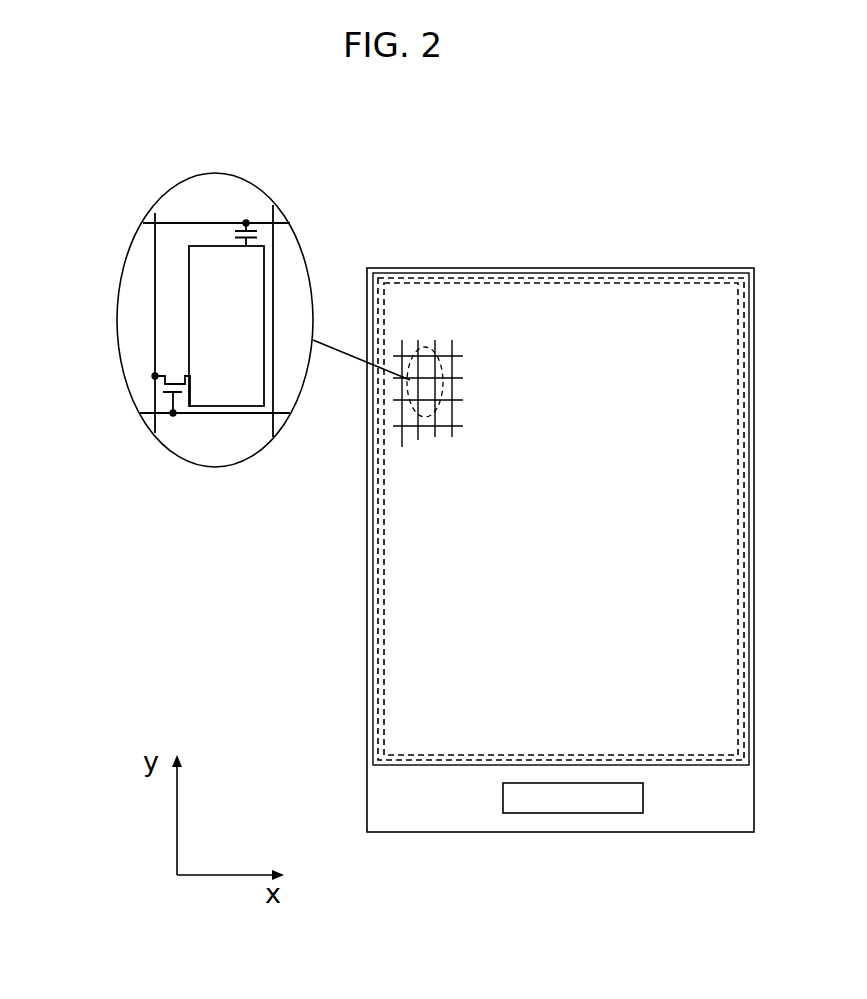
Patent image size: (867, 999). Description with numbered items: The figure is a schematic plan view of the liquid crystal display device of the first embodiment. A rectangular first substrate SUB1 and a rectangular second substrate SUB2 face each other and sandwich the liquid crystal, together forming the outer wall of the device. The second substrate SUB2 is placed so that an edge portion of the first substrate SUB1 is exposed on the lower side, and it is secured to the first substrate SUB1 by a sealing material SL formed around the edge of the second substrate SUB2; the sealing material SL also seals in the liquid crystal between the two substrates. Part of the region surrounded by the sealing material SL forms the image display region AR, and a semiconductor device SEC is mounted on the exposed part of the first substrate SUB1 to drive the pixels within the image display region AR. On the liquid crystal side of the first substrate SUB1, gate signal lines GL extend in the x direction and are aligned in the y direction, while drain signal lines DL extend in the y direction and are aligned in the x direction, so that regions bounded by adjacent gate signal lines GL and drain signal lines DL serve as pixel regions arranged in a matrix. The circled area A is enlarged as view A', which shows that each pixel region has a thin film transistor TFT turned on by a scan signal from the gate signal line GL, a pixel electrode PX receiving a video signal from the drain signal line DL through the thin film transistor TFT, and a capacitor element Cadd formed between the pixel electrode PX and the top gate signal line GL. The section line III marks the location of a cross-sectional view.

The enlarged view A' is at (263, 296).
The circled area A is at (425, 364).
The pixel electrode PX is at (208, 313).
The capacitor element Cadd is at (227, 237).
The thin film transistor TFT is at (160, 400).
The drain signal line DL is at (153, 320).
The gate signal line GL is at (223, 415).
The first substrate SUB1 is at (580, 268).
The second substrate SUB2 is at (417, 767).
The sealing material SL is at (377, 557).
The semiconductor device SEC is at (618, 813).
The image display region AR is at (650, 692).
The section line III- III is at (720, 746).